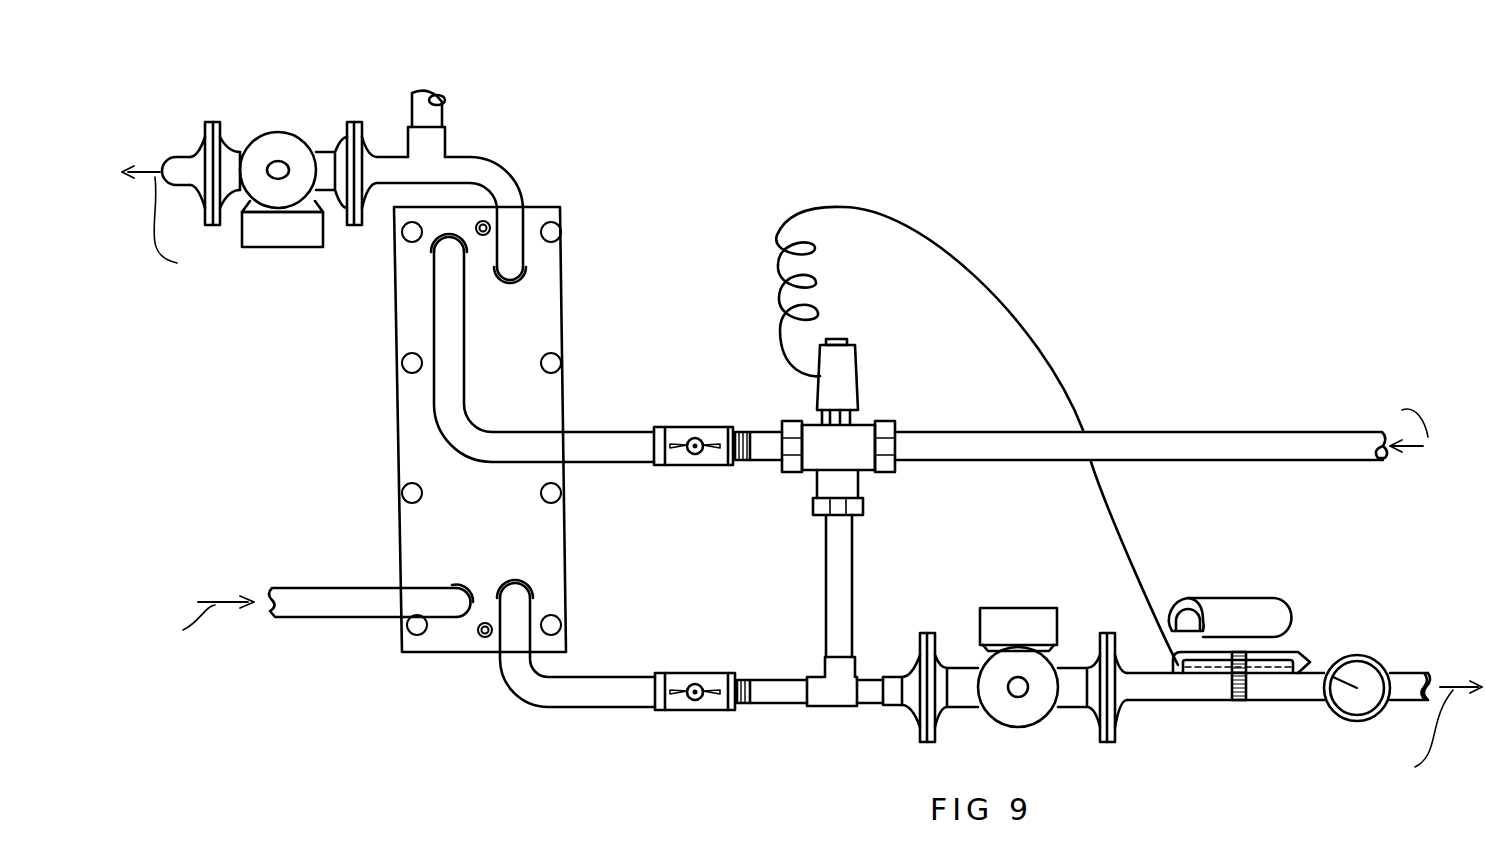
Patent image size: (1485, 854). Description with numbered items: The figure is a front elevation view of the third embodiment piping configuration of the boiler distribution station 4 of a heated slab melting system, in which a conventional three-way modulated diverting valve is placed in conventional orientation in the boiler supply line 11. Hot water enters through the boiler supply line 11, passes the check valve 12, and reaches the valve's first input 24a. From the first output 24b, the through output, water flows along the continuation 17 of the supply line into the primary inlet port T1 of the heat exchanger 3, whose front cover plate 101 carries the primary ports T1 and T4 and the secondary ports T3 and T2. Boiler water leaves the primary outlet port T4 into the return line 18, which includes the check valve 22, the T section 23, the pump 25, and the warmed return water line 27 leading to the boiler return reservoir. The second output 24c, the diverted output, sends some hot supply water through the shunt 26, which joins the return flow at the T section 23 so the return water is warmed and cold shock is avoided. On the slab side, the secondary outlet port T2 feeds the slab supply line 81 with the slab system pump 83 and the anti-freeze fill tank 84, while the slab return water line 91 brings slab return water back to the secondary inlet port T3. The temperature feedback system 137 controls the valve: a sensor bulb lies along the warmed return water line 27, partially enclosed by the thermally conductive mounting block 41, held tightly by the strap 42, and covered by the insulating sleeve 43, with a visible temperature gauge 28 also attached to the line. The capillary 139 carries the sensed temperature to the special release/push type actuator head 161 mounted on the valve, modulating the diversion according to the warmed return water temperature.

The heat exchanger 3 is at (584, 228).
The boiler system distribution station 4 is at (824, 186).
The boiler supply line 11 is at (1112, 432).
The check valve 12 is at (694, 427).
The continuation of the supply line 17 is at (600, 432).
The return line 18 is at (548, 710).
The check valve 22 is at (688, 673).
The T section 23 is at (872, 710).
The first input 24a is at (864, 425).
The first output 24b is at (806, 480).
The second output 24c is at (865, 483).
The pump 25 is at (1012, 608).
The shunt 26 is at (826, 588).
The warmed return water line 27 is at (892, 677).
The temperature gauge 28 is at (1350, 721).
The mounting block 41 is at (1181, 672).
The strap 42 is at (1233, 690).
The insulating sleeve 43 is at (1204, 600).
The slab supply line 81 is at (180, 157).
The slab system pump 83 is at (281, 133).
The anti-freeze fill tank 84 is at (445, 100).
The slab return water line 91 is at (326, 588).
The front cover plate 101 is at (548, 300).
The temperature feedback system 137 is at (1145, 505).
The capillary 139 is at (1038, 340).
The release/push type actuator head 161 is at (856, 355).
The primary inlet port T1 is at (448, 232).
The secondary outlet port T2 is at (509, 288).
The secondary inlet port T3 is at (454, 577).
The primary outlet port T4 is at (514, 575).